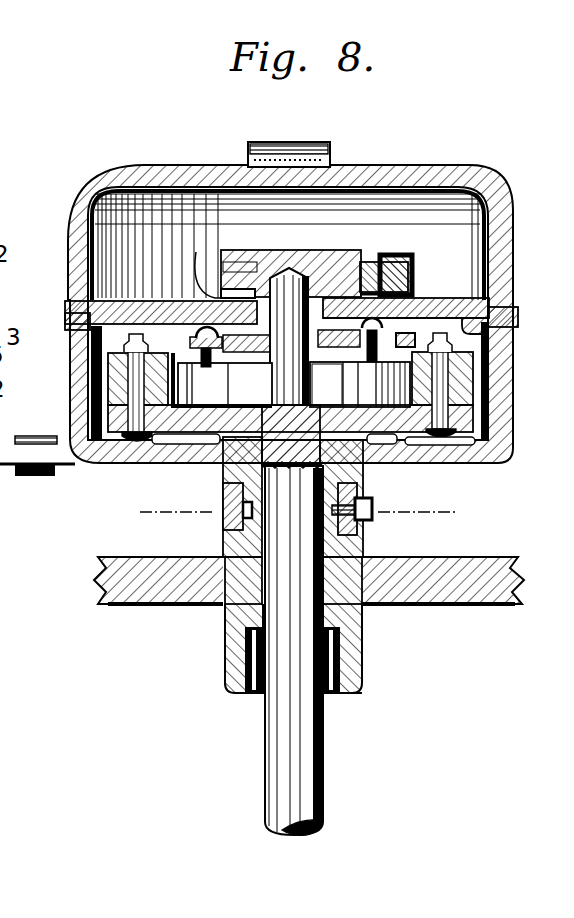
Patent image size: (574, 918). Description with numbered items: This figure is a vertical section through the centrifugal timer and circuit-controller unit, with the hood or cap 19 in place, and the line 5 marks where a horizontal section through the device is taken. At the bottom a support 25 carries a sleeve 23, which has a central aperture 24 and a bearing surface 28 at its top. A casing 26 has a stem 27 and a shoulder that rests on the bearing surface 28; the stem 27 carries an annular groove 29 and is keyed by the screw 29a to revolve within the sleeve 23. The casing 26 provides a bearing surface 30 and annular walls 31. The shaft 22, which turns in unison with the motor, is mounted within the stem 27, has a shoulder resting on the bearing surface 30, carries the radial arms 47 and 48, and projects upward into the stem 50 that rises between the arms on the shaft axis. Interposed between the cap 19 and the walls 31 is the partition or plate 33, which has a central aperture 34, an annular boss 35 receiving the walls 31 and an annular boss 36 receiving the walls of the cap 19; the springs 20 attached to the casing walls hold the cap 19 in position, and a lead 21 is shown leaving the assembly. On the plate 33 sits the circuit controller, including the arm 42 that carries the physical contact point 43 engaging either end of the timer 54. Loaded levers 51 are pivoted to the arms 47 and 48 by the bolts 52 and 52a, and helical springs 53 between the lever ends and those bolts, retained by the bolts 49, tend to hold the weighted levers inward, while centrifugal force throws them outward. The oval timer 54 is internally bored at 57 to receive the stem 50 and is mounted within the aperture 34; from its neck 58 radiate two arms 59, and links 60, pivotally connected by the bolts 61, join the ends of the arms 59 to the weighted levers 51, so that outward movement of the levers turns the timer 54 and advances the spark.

The section line 5 is at (298, 512).
The hood or cap 19 is at (385, 168).
The springs 20 is at (305, 148).
The lead wire 21 is at (33, 478).
The shaft 22 is at (326, 774).
The sleeve 23 is at (364, 660).
The central aperture 24 is at (340, 694).
The support 25 is at (143, 606).
The casing 26 is at (449, 452).
The stem 27 is at (357, 624).
The bearing surface 28 is at (232, 490).
The annular groove 29 is at (242, 512).
The screw 29a is at (378, 514).
The bearing surface 30 is at (365, 468).
The annular walls 31 is at (503, 375).
The partition or plate 33 is at (156, 300).
The central aperture 34 is at (213, 261).
The annular boss 35 is at (508, 308).
The annular boss 36 is at (76, 310).
The arm 42 is at (396, 255).
The physical contact point 43 is at (365, 262).
The radial arm 47 is at (405, 442).
The radial arm 48 is at (187, 440).
The bolt 49 is at (128, 420).
The stem 50 is at (268, 284).
The loaded levers 51 is at (110, 371).
The bolt 52 is at (493, 460).
The bolt 52a is at (128, 466).
The helical springs 53 is at (447, 293).
The timer 54 is at (308, 258).
The bore 57 is at (288, 268).
The neck 58 is at (316, 345).
The arms 59 is at (414, 295).
The links 60 is at (404, 305).
The bolts 61 is at (293, 355).